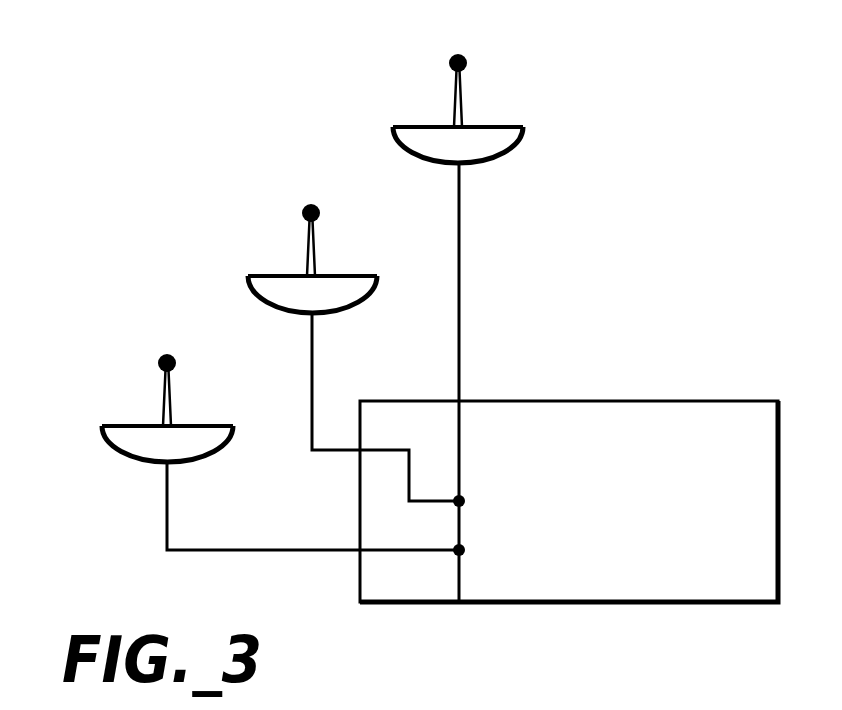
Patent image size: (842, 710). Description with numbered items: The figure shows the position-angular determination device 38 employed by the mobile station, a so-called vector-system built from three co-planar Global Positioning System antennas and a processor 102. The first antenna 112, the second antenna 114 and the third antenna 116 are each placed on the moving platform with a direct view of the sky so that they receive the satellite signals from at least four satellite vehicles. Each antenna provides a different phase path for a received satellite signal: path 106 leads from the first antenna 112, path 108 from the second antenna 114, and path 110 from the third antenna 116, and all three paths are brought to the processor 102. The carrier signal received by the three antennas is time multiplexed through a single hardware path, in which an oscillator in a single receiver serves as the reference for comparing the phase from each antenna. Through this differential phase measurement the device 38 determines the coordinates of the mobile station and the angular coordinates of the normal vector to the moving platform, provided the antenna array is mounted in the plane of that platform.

The position-angular determination device 38 is at (625, 212).
The processor 102 is at (608, 401).
The path 106 is at (167, 520).
The path 108 is at (312, 383).
The path 110 is at (459, 303).
The first antenna 112 is at (125, 425).
The second antenna 114 is at (272, 275).
The third antenna 116 is at (418, 126).